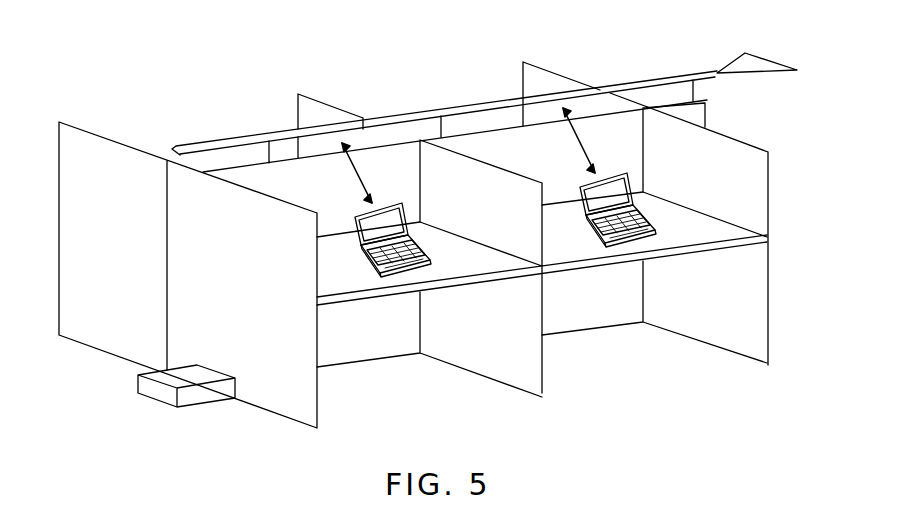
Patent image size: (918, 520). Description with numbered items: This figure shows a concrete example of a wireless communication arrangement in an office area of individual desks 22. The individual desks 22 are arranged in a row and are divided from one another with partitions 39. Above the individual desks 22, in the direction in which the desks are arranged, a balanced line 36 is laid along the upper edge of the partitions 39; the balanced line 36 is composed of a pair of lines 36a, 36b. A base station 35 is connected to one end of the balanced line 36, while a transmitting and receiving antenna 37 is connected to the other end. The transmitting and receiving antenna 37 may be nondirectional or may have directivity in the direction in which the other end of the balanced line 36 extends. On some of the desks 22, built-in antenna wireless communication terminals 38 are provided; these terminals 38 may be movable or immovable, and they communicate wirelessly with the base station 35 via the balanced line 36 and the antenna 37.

The individual desk 22 is at (350, 302).
The base station 35 is at (157, 395).
The balanced line 36 is at (444, 108).
The line 36a is at (626, 83).
The line 36b is at (667, 83).
The transmitting and receiving antenna 37 is at (774, 61).
The built-in antenna wireless communication terminal 38 is at (393, 272).
The partition 39 is at (333, 103).